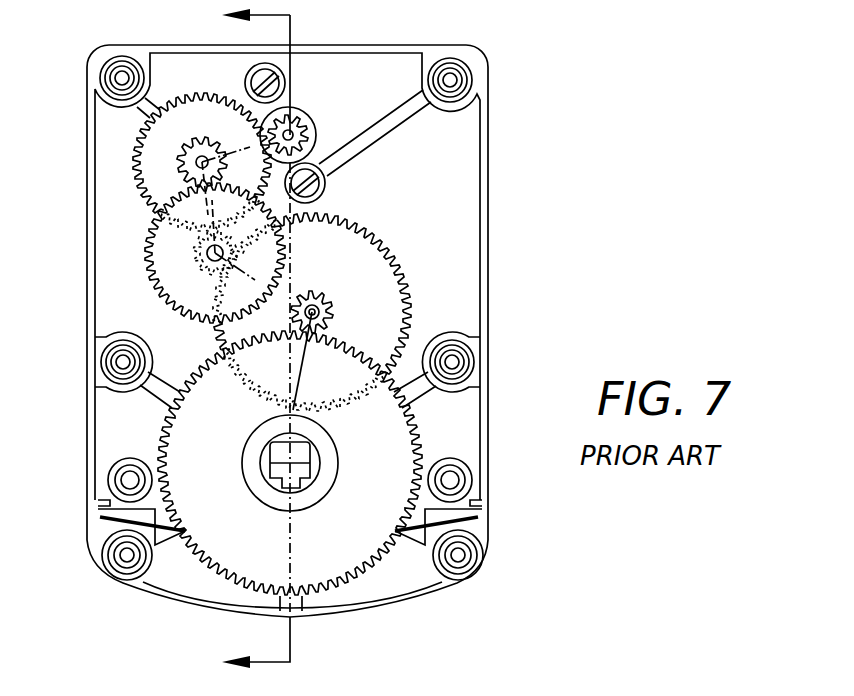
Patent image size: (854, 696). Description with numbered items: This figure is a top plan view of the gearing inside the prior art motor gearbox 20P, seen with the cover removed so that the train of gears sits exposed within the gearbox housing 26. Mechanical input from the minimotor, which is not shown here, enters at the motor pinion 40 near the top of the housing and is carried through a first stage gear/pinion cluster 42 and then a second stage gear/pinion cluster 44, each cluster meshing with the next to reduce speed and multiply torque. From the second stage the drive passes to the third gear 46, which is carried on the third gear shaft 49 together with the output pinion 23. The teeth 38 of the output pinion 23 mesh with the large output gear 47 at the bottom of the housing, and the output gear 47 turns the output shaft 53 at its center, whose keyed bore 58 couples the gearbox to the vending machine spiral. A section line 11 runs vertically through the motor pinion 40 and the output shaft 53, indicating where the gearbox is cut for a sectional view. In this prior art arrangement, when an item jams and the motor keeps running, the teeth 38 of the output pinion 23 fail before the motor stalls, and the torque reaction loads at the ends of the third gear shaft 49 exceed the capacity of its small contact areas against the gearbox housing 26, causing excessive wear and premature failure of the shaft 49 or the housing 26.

The section line 11- 11 is at (240, 340).
The prior art motor gearbox 20P is at (518, 275).
The output pinion 23 is at (327, 304).
The gearbox housing 26 is at (490, 198).
The teeth 38 is at (312, 292).
The motor pinion 40 is at (318, 118).
The first stage gear/pinion cluster 42 is at (132, 183).
The second stage gear/pinion cluster 44 is at (148, 270).
The third gear 46 is at (400, 262).
The output gear 47 is at (416, 430).
The third gear shaft 49 is at (332, 315).
The output shaft 53 is at (243, 463).
The keyed output bore 58 is at (322, 466).